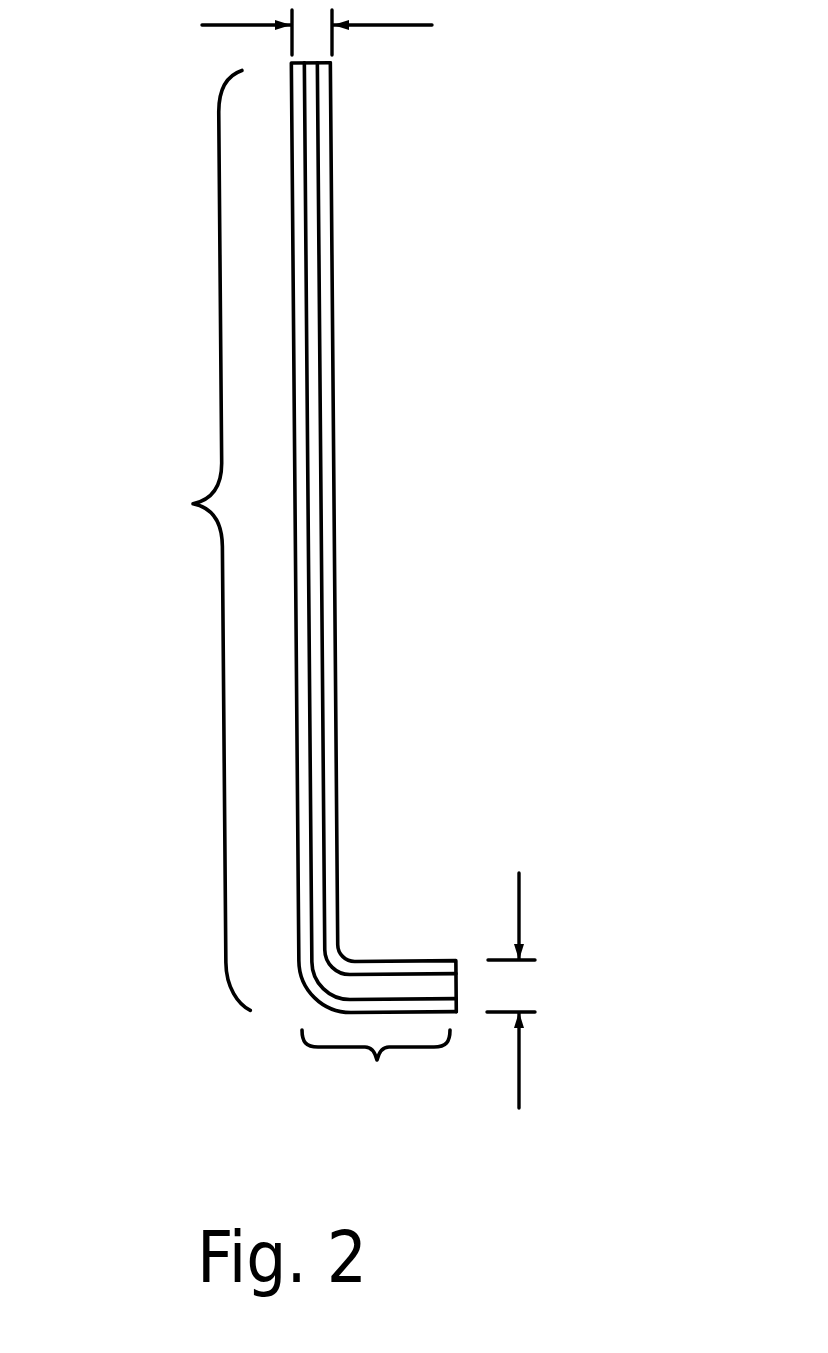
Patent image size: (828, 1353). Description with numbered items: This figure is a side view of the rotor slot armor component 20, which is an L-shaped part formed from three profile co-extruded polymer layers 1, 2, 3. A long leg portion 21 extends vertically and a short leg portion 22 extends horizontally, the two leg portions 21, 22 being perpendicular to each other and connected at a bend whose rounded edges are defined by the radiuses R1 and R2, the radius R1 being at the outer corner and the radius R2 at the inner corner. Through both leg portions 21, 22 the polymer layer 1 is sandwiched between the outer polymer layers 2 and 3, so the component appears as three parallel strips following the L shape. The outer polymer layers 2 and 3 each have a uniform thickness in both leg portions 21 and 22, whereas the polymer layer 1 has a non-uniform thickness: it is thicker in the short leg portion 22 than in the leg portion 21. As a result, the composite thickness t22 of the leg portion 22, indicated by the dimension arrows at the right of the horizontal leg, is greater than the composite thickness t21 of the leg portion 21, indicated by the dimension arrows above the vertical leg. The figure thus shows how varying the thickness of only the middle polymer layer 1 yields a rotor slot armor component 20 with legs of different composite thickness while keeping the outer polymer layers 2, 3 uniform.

The polymer layer 1 is at (318, 175).
The outer polymer layer 2 is at (331, 287).
The outer polymer layer 3 is at (300, 110).
The rotor slot armor component 20 is at (276, 537).
The leg portion 21 is at (201, 540).
The leg portion 22 is at (376, 1070).
The composite thickness of leg portion 21 t21 is at (400, 25).
The composite thickness of leg portion 22 t22 is at (519, 903).
The radius R1 is at (281, 1027).
The radius R2 is at (352, 952).